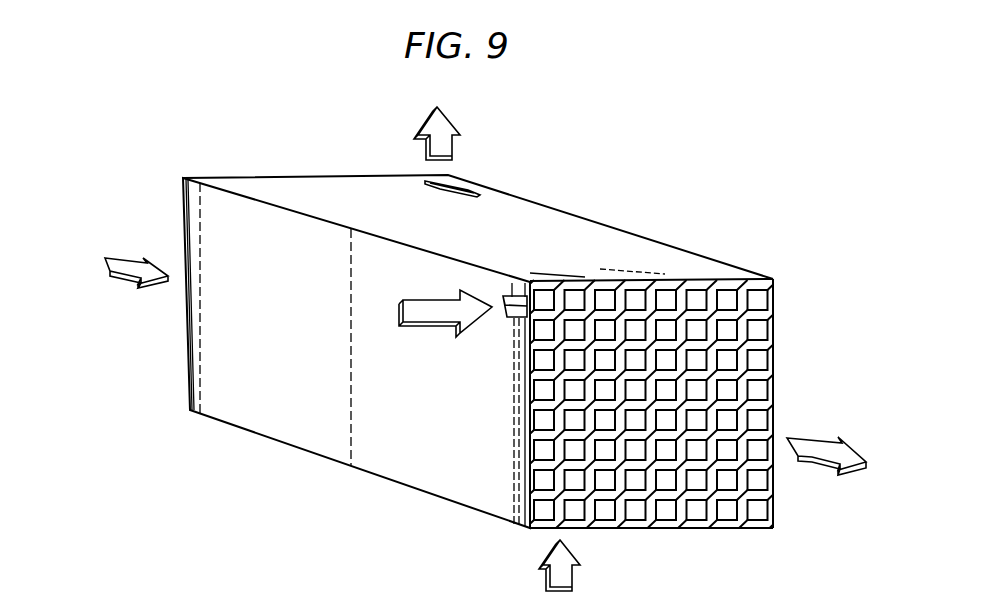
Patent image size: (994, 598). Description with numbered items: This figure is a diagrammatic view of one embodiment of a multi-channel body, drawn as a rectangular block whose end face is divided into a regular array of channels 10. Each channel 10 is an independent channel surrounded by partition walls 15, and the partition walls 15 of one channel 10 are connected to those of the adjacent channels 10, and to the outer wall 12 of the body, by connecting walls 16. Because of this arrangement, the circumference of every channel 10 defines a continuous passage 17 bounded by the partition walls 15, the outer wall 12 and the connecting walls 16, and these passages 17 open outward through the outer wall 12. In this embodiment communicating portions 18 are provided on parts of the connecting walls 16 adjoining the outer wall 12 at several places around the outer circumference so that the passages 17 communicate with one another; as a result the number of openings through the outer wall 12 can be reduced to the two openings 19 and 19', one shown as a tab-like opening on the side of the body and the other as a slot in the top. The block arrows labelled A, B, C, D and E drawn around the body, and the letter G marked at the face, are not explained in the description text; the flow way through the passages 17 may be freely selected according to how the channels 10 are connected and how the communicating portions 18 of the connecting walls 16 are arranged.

The channel 10 is at (733, 521).
The outer wall 12 is at (572, 277).
The partition wall 15 is at (775, 320).
The connecting wall 16 is at (770, 345).
The passage 17 is at (708, 330).
The communicating portion 18 is at (661, 318).
The opening 19 is at (502, 324).
The opening 19' is at (480, 176).
The direction arrow A is at (830, 447).
The direction arrow B is at (136, 268).
The direction arrow C is at (432, 315).
The direction arrow D is at (443, 144).
The direction arrow E is at (570, 573).
The gap between cells G is at (647, 288).